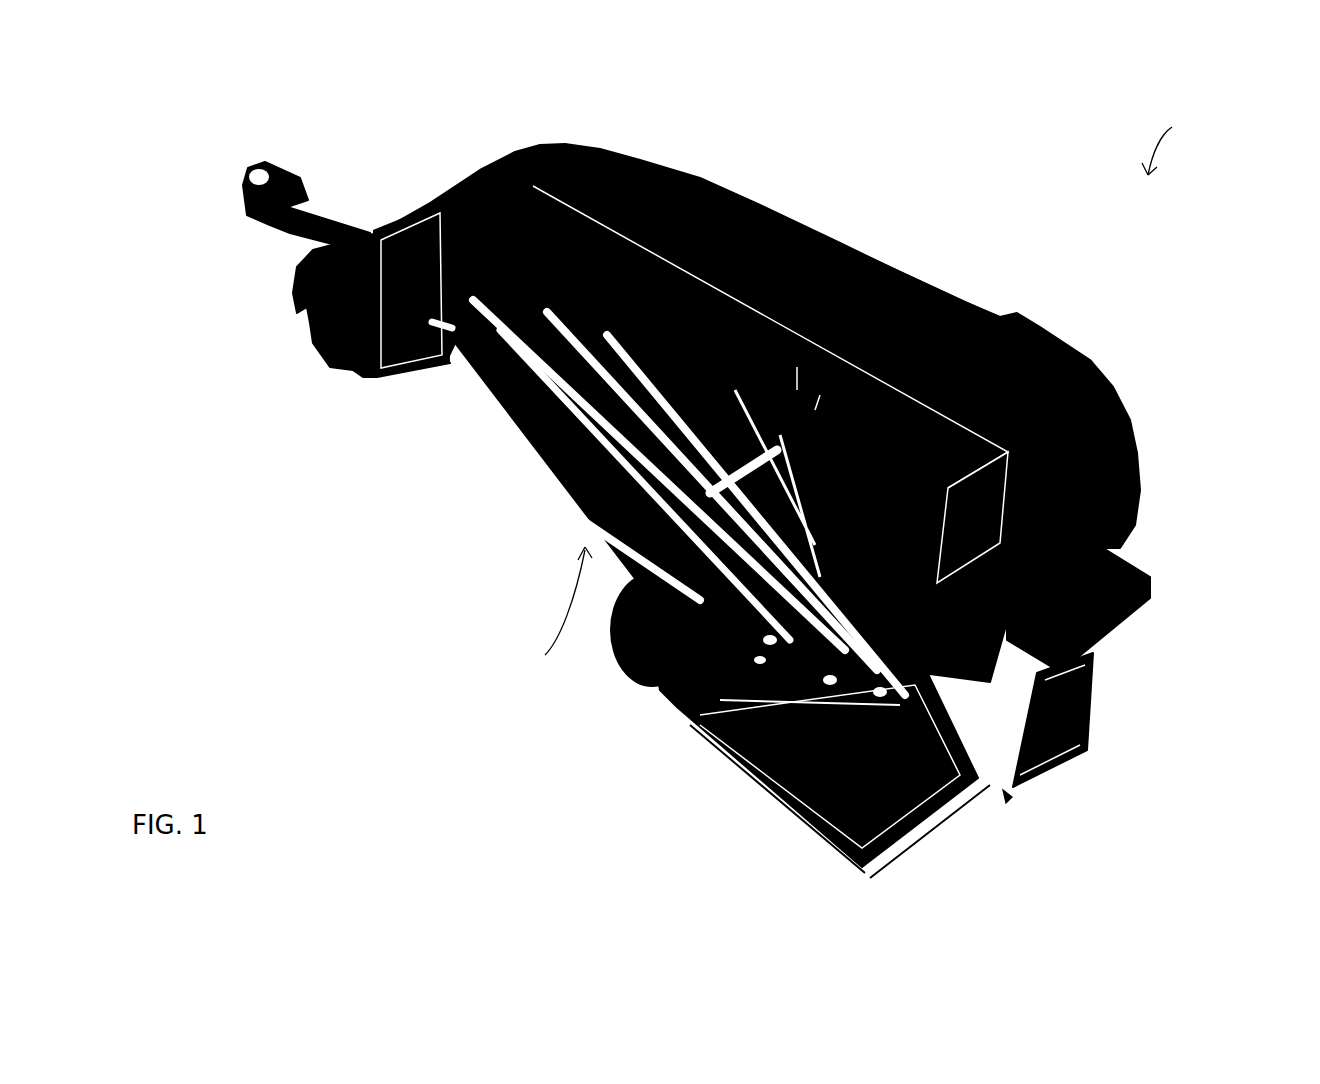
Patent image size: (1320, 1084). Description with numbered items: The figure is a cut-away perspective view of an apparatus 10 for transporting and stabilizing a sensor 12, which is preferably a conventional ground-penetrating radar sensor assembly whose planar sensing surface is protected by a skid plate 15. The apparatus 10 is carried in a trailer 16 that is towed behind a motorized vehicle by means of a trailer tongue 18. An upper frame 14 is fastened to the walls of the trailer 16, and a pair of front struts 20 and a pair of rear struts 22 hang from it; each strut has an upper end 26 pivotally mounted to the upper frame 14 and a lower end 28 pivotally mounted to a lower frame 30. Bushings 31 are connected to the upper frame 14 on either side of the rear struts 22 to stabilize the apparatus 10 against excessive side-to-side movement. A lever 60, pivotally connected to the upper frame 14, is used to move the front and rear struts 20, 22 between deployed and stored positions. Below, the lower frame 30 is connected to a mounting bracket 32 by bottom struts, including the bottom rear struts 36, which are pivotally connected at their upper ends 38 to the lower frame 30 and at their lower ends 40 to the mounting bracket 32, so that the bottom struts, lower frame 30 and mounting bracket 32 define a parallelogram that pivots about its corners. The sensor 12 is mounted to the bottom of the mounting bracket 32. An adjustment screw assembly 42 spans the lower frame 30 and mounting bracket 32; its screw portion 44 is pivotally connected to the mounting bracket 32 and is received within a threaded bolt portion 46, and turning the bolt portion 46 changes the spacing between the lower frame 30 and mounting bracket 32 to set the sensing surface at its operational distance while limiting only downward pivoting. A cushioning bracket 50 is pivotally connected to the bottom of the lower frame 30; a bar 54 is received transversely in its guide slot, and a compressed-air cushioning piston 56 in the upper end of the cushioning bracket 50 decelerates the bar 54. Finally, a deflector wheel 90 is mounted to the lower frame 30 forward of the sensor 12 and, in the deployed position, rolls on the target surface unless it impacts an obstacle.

The apparatus 10 is at (1174, 151).
The sensor 12 is at (1003, 795).
The upper frame 14 is at (537, 367).
The skid plate 15 is at (958, 818).
The trailer 16 is at (1105, 358).
The trailer tongue 18 is at (326, 213).
The front struts 20 is at (565, 510).
The rear struts 22 is at (660, 480).
The upper end 26 is at (540, 392).
The lower end 28 is at (620, 645).
The lower frame 30 is at (740, 700).
The bushings 31 is at (808, 218).
The mounting bracket 32 is at (725, 758).
The bottom rear struts 36 is at (1067, 677).
The upper ends 38 is at (717, 693).
The lower ends 40 is at (750, 795).
The adjustment screw assembly 42 is at (1040, 688).
The screw portion 44 is at (1016, 717).
The bolt portion 46 is at (1035, 632).
The cushioning bracket 50 is at (847, 430).
The bar 54 is at (832, 399).
The cushioning piston 56 is at (816, 378).
The lever 60 is at (549, 608).
The deflector wheel 90 is at (640, 635).